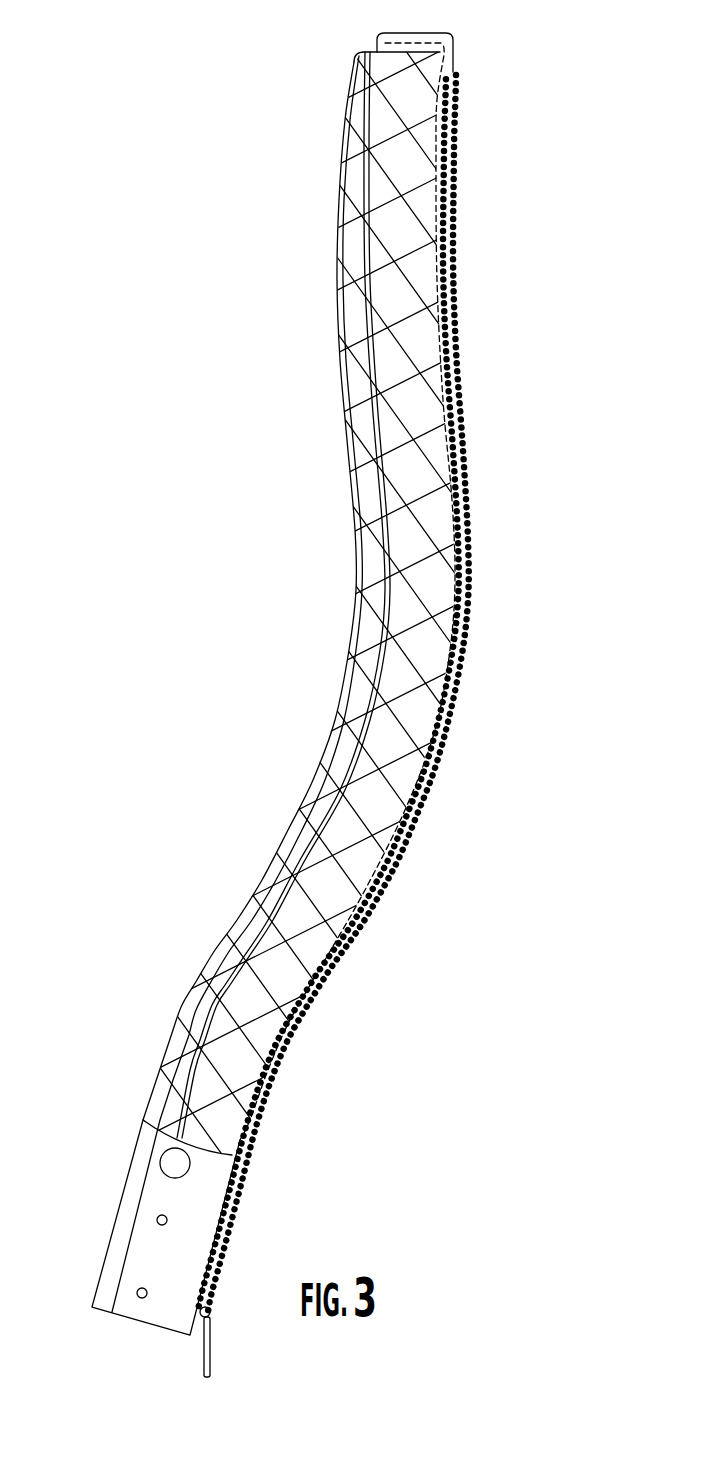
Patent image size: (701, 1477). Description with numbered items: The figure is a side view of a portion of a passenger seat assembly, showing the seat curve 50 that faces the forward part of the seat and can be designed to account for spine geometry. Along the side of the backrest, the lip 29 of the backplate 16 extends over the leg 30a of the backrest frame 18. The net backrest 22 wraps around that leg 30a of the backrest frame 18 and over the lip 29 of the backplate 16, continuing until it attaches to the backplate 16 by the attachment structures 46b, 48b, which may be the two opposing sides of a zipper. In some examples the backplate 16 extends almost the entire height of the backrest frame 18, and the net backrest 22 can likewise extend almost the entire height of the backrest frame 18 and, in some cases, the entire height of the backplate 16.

The backplate 16 is at (430, 95).
The backrest frame 18 is at (357, 53).
The net backrest 22 is at (338, 335).
The lip 29 is at (402, 497).
The leg 30a is at (368, 580).
The attachment structure 46b is at (452, 668).
The attachment structure 48b is at (433, 782).
The seat curve 50 is at (307, 465).